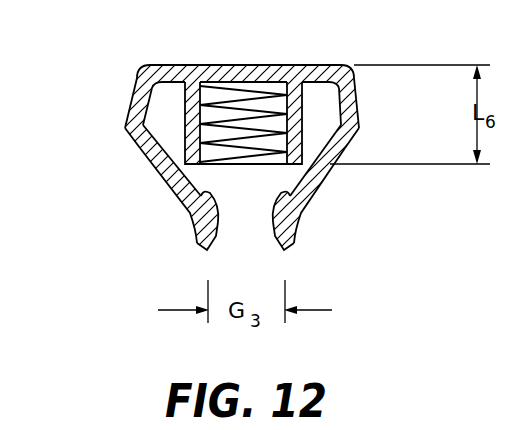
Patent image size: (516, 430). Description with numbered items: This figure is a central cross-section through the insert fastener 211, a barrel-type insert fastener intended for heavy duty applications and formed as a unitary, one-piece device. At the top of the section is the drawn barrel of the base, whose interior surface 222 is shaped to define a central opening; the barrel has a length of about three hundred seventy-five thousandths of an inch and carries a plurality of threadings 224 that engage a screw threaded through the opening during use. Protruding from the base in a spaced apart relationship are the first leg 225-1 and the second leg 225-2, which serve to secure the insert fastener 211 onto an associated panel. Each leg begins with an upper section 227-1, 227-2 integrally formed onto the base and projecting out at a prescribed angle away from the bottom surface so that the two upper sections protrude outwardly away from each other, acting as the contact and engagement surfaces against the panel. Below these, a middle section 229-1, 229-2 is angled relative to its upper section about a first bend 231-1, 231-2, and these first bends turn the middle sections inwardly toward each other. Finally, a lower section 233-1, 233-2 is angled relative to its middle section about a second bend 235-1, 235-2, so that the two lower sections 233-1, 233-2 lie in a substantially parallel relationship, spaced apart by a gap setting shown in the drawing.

The insert fastener 211 is at (362, 298).
The interior surface 222 is at (193, 80).
The threadings 224 is at (257, 85).
The first leg 225-1 is at (116, 161).
The second leg 225-2 is at (378, 150).
The upper section 227-1 is at (132, 100).
The upper section 227-2 is at (358, 67).
The middle section 229-1 is at (167, 183).
The middle section 229-2 is at (330, 173).
The first bend 231-1 is at (128, 140).
The first bend 231-2 is at (360, 133).
The lower section 233-1 is at (200, 243).
The lower section 233-2 is at (294, 242).
The second bend 235-1 is at (193, 200).
The second bend 235-2 is at (303, 198).